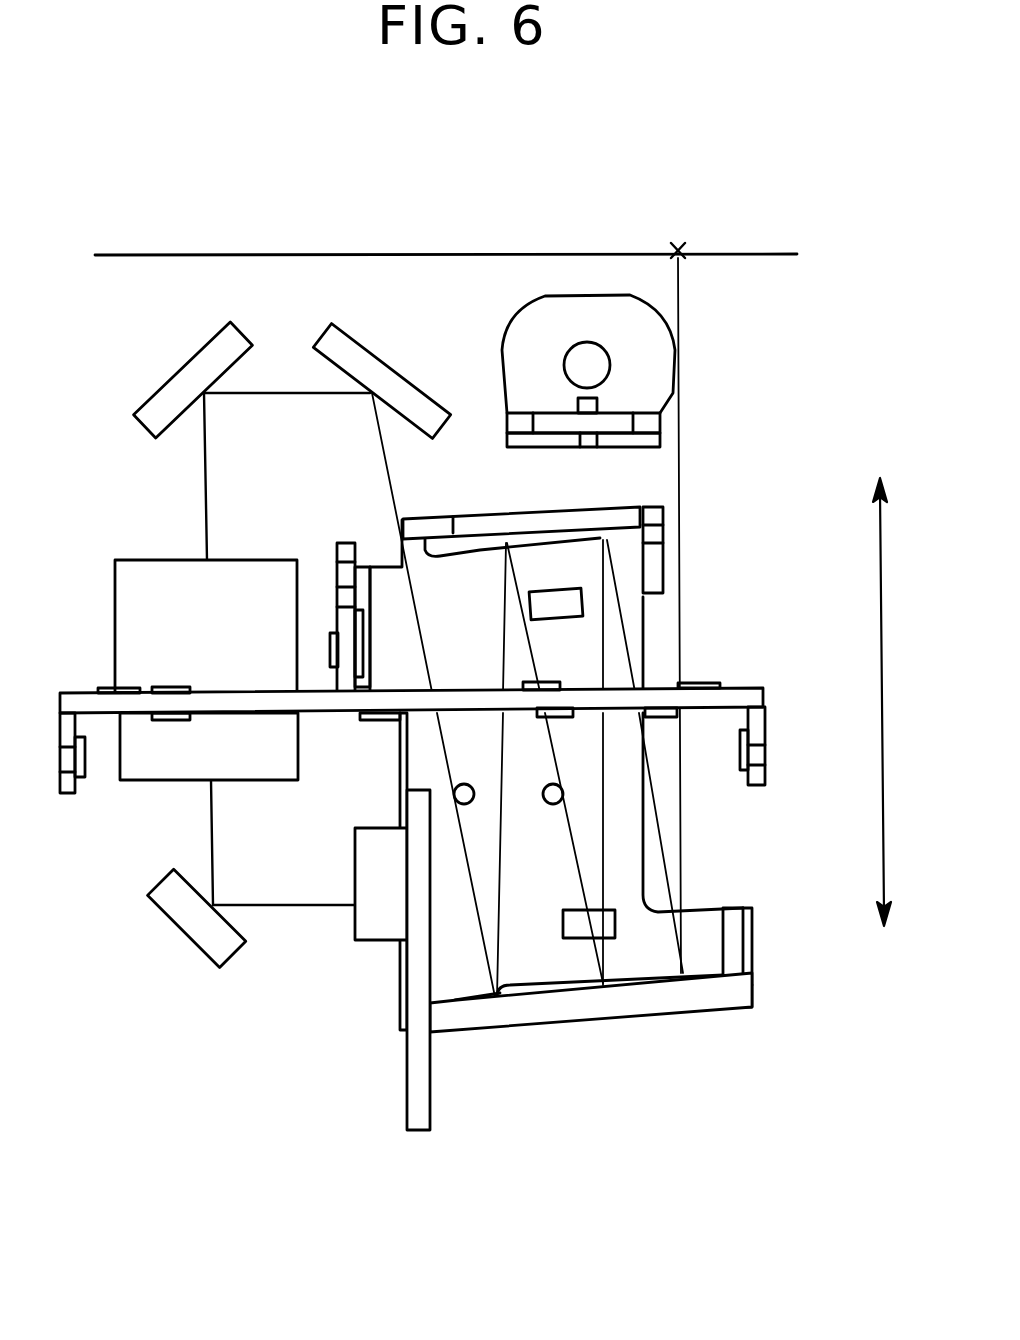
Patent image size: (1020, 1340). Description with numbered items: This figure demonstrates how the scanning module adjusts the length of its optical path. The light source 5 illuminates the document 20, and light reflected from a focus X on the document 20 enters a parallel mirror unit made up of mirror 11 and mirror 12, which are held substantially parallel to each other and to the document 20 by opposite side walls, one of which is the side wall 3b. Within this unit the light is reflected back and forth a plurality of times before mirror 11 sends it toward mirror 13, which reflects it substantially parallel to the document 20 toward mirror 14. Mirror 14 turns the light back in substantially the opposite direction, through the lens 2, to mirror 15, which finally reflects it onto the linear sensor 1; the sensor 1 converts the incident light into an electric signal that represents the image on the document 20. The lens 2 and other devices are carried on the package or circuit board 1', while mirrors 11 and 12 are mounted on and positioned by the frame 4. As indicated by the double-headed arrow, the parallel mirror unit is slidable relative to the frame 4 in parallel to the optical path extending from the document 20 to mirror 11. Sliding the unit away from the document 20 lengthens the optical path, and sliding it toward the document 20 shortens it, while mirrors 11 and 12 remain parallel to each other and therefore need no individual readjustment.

The linear sensor 1 is at (358, 911).
The package or circuit board 1' is at (399, 999).
The lens 2 is at (125, 590).
The side wall 3b is at (633, 867).
The frame 4 is at (713, 700).
The light source 5 is at (668, 355).
The mirror 11 is at (630, 1010).
The mirror 12 is at (535, 520).
The mirror 13 is at (372, 352).
The mirror 14 is at (233, 337).
The mirror 15 is at (180, 923).
The document 20 is at (337, 255).
The focus X is at (679, 248).